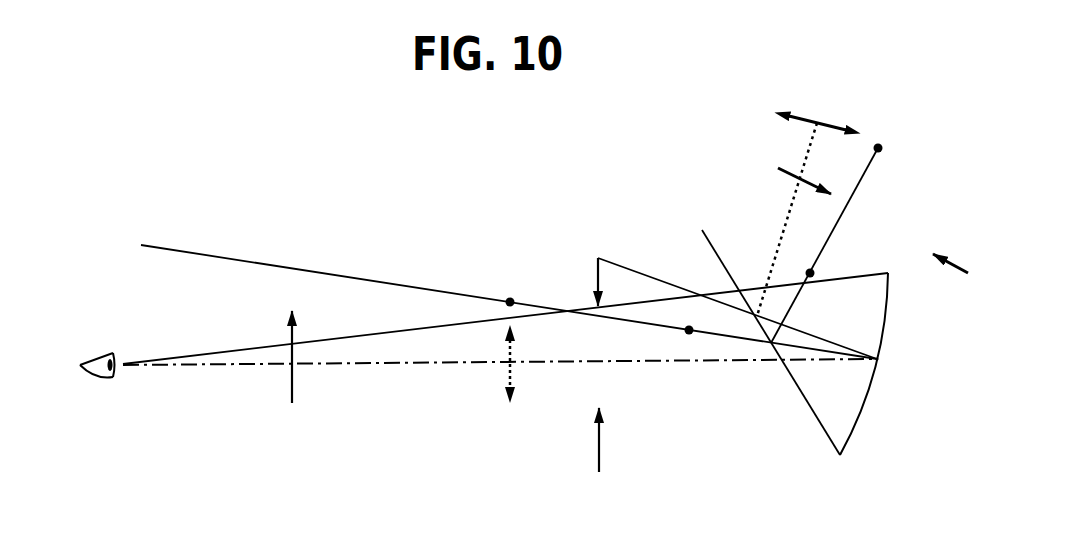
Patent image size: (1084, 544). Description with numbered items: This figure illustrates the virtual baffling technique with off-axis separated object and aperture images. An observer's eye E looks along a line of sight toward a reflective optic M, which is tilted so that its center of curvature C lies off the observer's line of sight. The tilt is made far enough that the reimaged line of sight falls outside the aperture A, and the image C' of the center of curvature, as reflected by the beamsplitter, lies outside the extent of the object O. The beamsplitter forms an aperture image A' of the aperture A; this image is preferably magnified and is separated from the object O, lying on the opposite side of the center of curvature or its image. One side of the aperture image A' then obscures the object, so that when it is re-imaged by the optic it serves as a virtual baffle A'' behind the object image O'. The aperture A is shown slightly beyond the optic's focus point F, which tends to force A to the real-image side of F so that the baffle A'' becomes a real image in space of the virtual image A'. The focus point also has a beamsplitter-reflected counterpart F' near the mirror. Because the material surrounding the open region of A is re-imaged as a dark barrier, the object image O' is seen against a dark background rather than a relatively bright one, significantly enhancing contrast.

The eye of observer E is at (109, 377).
The concave mirror M is at (801, 342).
The aperture A is at (586, 275).
The aperture image A' is at (792, 173).
The virtual baffle A'' is at (306, 357).
The object O is at (801, 204).
The object image O' is at (526, 361).
The center of curvature C is at (504, 290).
The image of center of curvature C' is at (840, 242).
The focus point F is at (688, 343).
The image of focal point F' is at (803, 264).